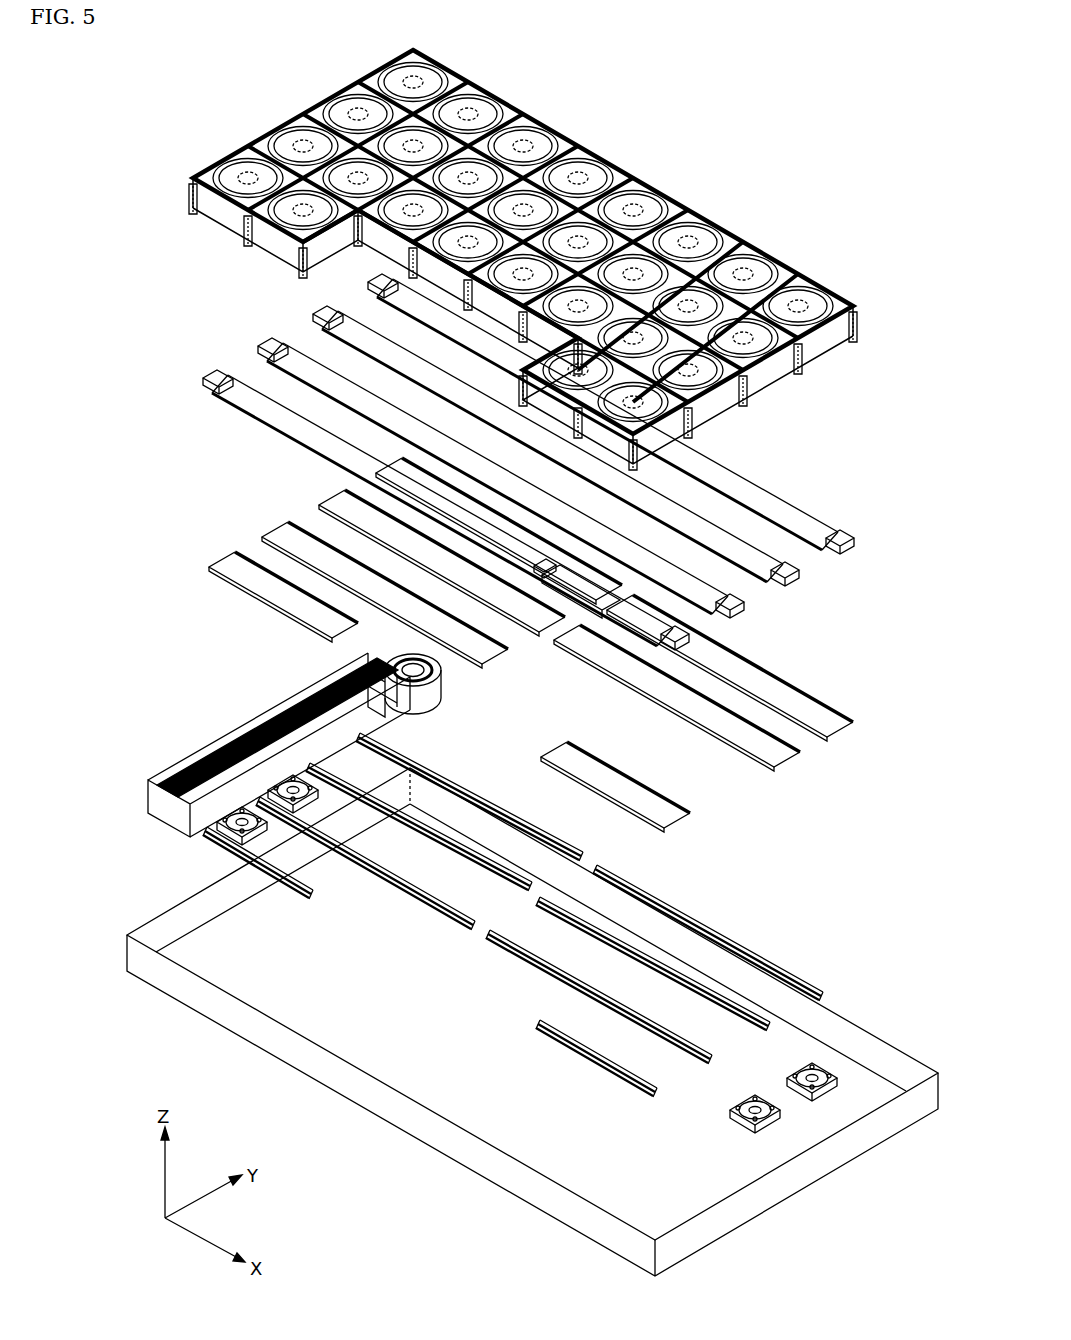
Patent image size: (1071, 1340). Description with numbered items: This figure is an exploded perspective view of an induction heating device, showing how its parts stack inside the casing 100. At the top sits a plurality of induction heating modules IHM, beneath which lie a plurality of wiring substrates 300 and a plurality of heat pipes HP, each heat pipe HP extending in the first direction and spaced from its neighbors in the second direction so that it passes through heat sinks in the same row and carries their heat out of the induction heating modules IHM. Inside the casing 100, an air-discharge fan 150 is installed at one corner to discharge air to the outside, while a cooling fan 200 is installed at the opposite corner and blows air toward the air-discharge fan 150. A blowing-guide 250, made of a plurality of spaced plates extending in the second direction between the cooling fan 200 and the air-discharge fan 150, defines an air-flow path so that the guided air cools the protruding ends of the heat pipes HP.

The induction heating module IHM is at (593, 147).
The wiring substrate 300 is at (795, 515).
The blowing-guide 250 is at (237, 762).
The cooling fan 200 is at (162, 826).
The air-discharge fan 150 is at (438, 708).
The heat pipe HP is at (780, 950).
The casing 100 is at (788, 1183).